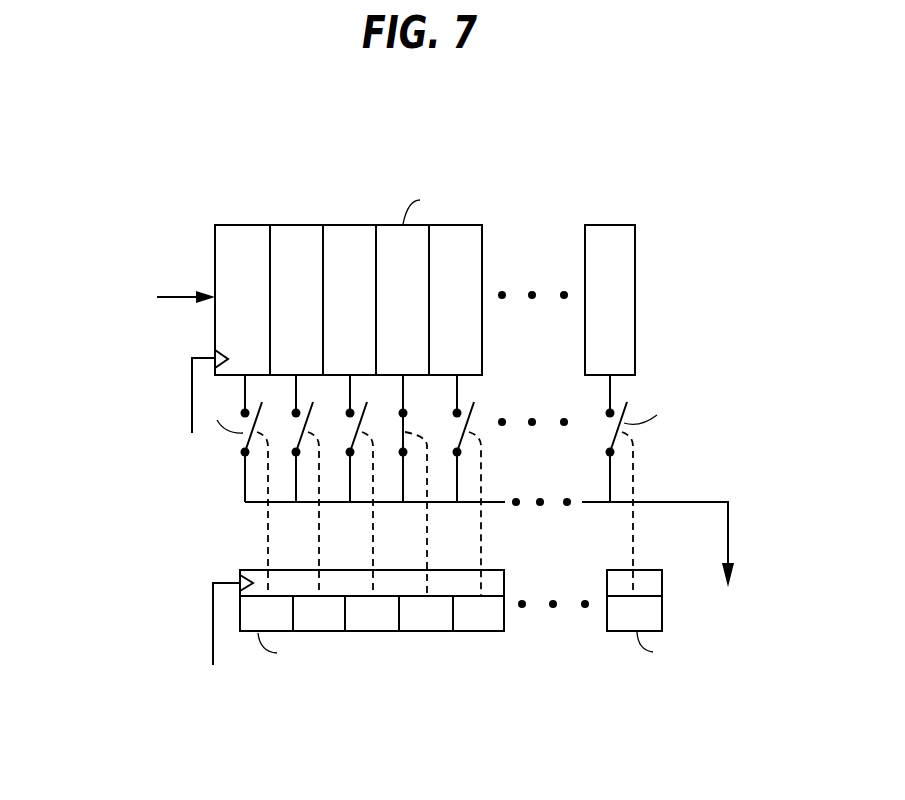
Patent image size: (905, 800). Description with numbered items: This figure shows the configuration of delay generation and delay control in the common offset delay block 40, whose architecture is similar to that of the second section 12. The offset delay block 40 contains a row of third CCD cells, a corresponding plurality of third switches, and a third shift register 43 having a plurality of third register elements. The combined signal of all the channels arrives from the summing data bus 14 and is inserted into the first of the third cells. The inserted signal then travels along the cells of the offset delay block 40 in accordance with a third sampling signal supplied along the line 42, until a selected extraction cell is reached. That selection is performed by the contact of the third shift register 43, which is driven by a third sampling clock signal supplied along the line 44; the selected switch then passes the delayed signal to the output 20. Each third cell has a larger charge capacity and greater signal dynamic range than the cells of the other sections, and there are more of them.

The second section 12 is at (638, 170).
The summing data bus 14 is at (151, 284).
The line 42 is at (192, 402).
The common offset delay block 40 is at (580, 718).
The output line 20 is at (683, 535).
The line 44 is at (212, 608).
The third shift register 43 is at (393, 637).